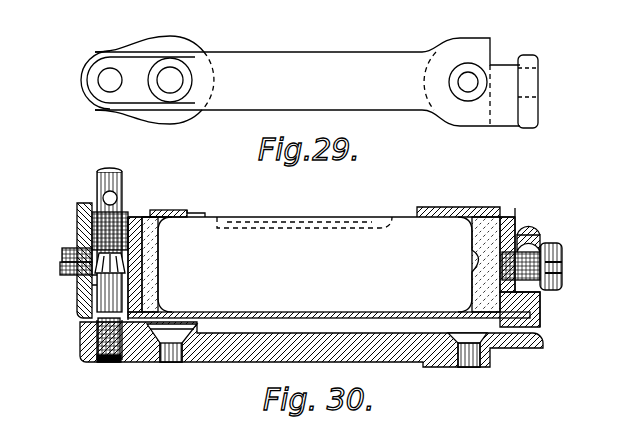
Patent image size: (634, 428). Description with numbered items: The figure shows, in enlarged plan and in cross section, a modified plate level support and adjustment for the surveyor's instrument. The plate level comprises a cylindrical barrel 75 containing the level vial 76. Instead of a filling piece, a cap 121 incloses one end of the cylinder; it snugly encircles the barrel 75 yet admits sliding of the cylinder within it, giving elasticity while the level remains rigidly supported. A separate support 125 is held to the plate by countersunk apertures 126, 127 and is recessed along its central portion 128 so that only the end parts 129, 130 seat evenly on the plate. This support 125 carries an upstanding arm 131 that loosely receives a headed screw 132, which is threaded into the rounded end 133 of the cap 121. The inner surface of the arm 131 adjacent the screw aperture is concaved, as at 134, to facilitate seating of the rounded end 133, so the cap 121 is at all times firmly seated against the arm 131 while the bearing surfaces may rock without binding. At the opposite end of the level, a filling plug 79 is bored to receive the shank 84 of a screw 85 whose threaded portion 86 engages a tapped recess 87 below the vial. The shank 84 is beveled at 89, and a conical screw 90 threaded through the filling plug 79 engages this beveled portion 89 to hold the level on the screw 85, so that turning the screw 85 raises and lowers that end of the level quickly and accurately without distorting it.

In FIG. 30, the cylindrical barrel 75 is at (254, 312).
In FIG. 30, the level vial 76 is at (334, 206).
In FIG. 30, the filling plug 79 is at (77, 227).
In FIG. 30, the shank 84 is at (108, 222).
In FIG. 30, the screw 85 is at (100, 173).
In FIG. 30, the threaded portion 86 is at (100, 363).
In FIG. 29, the tapped recess 87 is at (109, 72).
In FIG. 30, the tapped recess 87 is at (115, 363).
In FIG. 30, the beveled portion 89 is at (92, 280).
In FIG. 30, the conical screw 90 is at (65, 253).
In FIG. 30, the cap 121 is at (491, 190).
In FIG. 29, the separate support 125 is at (300, 82).
In FIG. 29, the countersunk aperture 126 is at (178, 73).
In FIG. 30, the countersunk aperture 126 is at (173, 364).
In FIG. 29, the countersunk aperture 127 is at (473, 77).
In FIG. 30, the countersunk aperture 127 is at (477, 360).
In FIG. 30, the central portion 128 is at (343, 363).
In FIG. 30, the end part 129 is at (450, 367).
In FIG. 30, the end part 130 is at (150, 343).
In FIG. 29, the upstanding arm 131 is at (538, 108).
In FIG. 30, the upstanding arm 131 is at (540, 280).
In FIG. 30, the headed screw 132 is at (542, 247).
In FIG. 30, the rounded end 133 is at (513, 243).
In FIG. 29, the concaved surface 134 is at (523, 80).
In FIG. 30, the concaved surface 134 is at (550, 290).